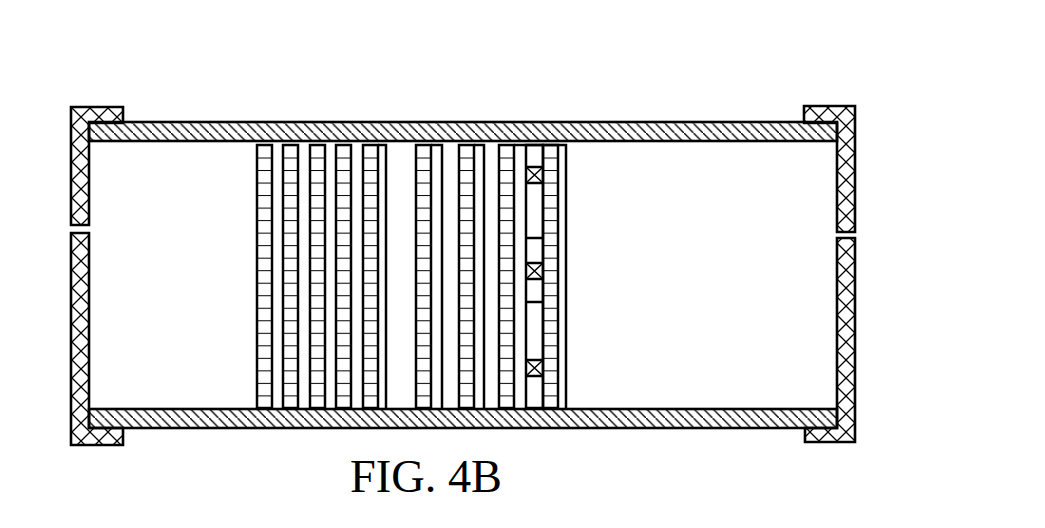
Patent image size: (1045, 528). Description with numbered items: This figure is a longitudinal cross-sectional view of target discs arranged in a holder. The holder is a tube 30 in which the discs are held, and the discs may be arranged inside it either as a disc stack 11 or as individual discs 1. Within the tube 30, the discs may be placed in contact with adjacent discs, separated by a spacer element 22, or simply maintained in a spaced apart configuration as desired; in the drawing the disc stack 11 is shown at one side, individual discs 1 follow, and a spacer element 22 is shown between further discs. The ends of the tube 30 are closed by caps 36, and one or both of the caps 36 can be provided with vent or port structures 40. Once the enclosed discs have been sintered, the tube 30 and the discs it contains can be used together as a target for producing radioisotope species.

The disc 1 is at (430, 158).
The disc stack 11 is at (305, 158).
The spacer element 22 is at (534, 158).
The tube 30 is at (623, 130).
The cap 36 is at (827, 106).
The vent or port structure 40 is at (860, 233).